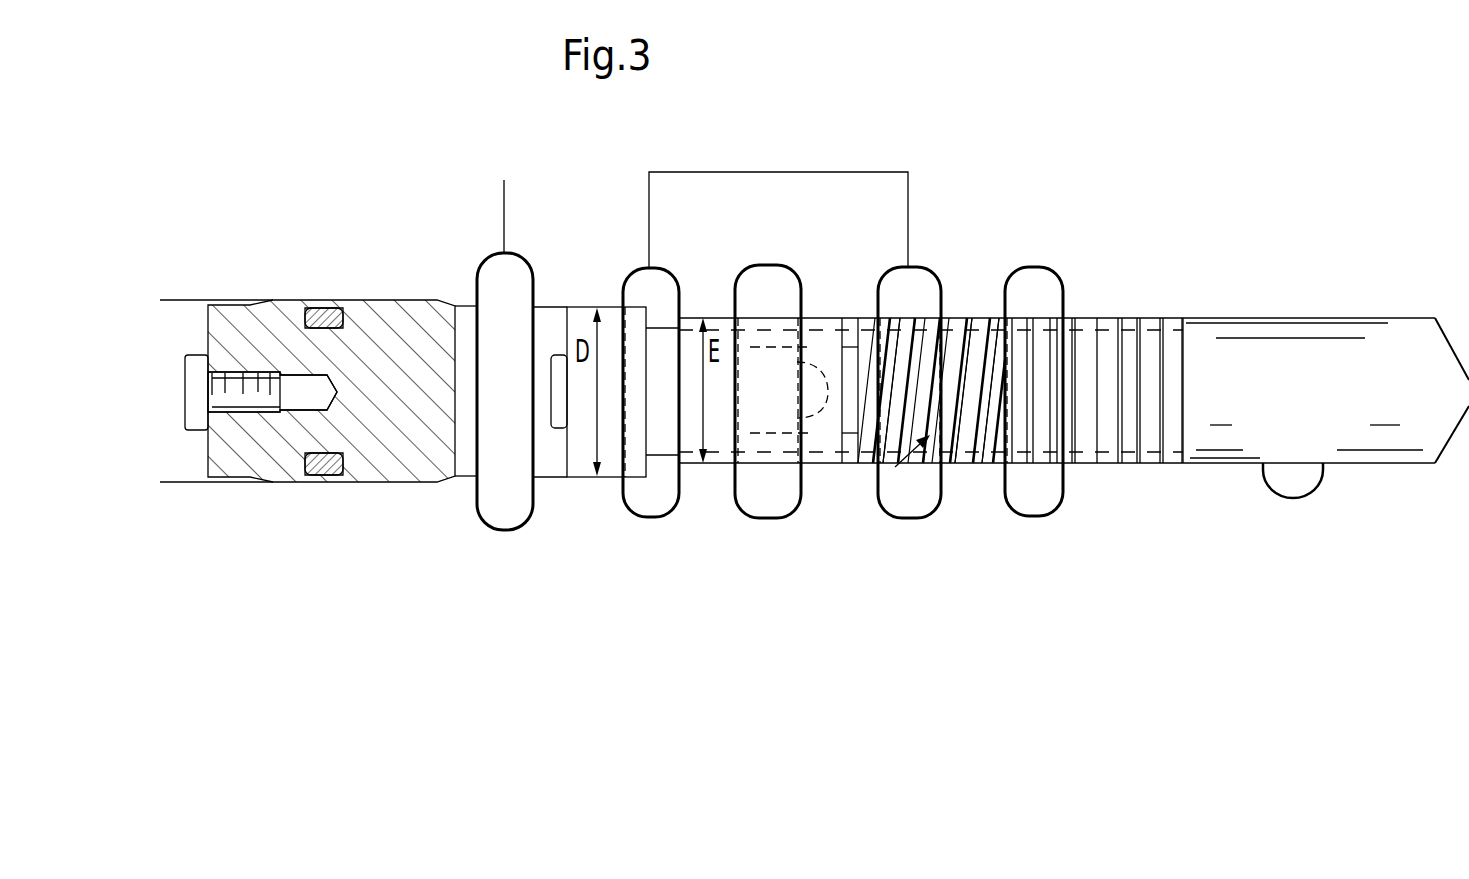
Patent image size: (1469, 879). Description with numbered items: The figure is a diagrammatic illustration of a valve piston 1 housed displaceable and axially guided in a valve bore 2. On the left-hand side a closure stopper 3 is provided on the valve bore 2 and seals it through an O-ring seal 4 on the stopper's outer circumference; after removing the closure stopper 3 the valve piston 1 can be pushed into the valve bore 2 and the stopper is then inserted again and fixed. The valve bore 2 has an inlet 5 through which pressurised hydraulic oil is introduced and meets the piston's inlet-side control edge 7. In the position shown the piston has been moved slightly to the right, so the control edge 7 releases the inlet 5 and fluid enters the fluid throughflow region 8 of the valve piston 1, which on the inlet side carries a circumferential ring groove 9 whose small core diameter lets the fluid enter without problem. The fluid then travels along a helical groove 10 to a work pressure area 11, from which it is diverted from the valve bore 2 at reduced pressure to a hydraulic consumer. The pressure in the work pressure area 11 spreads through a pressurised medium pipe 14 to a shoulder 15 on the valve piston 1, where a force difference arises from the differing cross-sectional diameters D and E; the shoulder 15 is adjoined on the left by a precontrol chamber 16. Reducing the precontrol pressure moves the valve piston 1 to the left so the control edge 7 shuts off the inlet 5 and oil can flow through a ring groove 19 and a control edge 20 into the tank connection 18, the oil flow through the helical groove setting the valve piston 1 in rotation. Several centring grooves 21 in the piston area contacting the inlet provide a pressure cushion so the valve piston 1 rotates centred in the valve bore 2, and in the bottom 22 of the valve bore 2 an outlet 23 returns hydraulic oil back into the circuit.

The valve piston 1 is at (552, 584).
The valve bore 2 is at (1396, 465).
The closure stopper 3 is at (418, 457).
The O-ring seal 4 is at (322, 477).
The inlet 5 is at (1034, 267).
The control edge 7 is at (1011, 463).
The fluid throughflow region 8 is at (968, 465).
The circumferential ring groove 9 is at (1003, 330).
The helical groove 10 is at (963, 330).
The work pressure area 11 is at (900, 500).
The pressurised medium pipe 14 is at (698, 172).
The shoulder 15 is at (643, 498).
The precontrol chamber 16 is at (485, 268).
The tank connection 18 is at (756, 500).
The ring groove 19 is at (856, 322).
The control edge 20 is at (845, 330).
The centring grooves 21 is at (1095, 330).
The bottom 22 is at (1437, 348).
The outlet 23 is at (1287, 475).